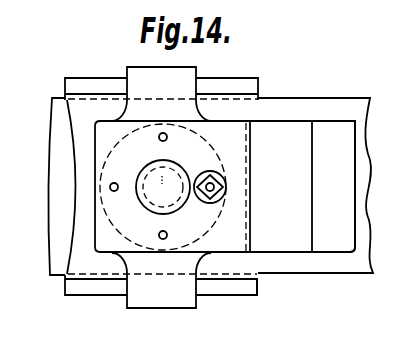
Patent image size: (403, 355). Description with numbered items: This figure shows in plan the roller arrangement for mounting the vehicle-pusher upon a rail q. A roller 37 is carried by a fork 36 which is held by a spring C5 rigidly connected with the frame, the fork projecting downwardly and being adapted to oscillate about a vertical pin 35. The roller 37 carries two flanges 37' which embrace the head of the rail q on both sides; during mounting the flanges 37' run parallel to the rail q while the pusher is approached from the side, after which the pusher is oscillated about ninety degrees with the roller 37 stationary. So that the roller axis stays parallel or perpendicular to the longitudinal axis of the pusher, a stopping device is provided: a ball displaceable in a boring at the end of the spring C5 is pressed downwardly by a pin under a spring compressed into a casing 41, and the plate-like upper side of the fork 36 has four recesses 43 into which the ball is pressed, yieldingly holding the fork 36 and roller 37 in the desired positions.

The vertical pin 35 is at (156, 194).
The fork 36 is at (158, 300).
The roller 37 is at (268, 210).
The flanges 37' is at (226, 302).
The casing 41 is at (224, 174).
The recesses 43 is at (166, 134).
The spring C5 is at (325, 245).
The rail q is at (340, 104).